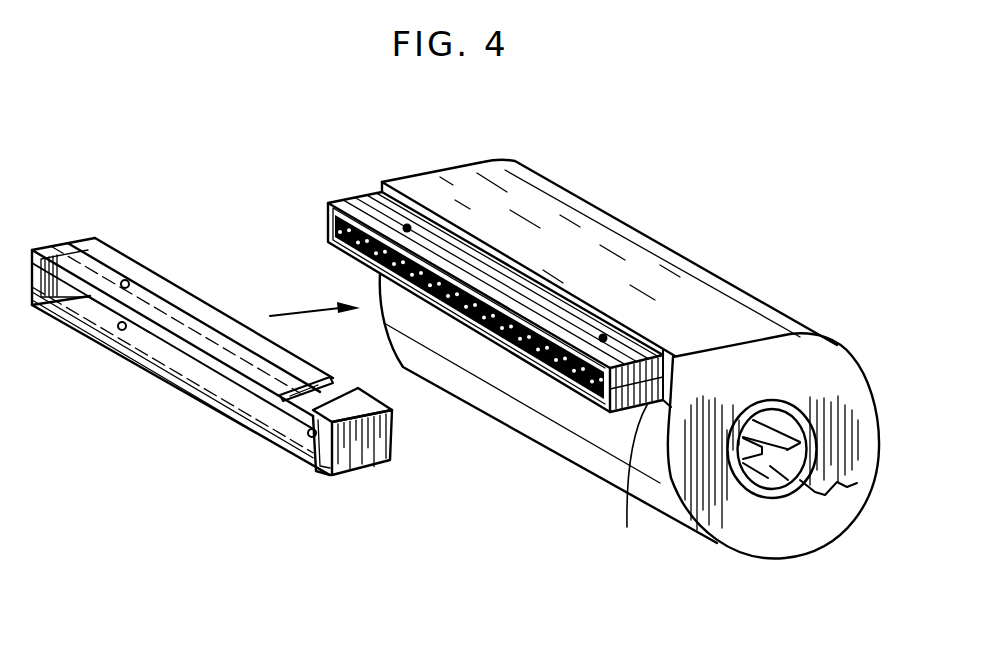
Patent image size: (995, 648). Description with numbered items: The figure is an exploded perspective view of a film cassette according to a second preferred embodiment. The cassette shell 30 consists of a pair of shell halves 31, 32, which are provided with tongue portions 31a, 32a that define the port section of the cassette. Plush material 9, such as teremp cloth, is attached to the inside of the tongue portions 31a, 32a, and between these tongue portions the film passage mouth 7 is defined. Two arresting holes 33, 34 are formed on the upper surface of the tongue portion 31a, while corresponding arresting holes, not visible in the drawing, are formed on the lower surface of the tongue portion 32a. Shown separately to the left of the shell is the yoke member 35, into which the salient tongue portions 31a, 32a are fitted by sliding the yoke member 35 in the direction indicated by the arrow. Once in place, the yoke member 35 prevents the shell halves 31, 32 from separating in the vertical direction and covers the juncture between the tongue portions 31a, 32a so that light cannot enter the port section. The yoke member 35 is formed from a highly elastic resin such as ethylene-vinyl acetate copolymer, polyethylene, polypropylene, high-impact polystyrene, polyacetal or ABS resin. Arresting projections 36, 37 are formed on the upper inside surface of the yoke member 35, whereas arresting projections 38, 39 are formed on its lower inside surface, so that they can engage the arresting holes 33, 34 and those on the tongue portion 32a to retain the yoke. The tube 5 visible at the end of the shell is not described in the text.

The tube 5 is at (788, 400).
The film passage mouth 7 is at (518, 353).
The plush material 9 is at (567, 380).
The cassette shell 30 is at (603, 191).
The shell half 31 is at (829, 363).
The tongue portion 31a is at (363, 207).
The shell half 32 is at (778, 536).
The tongue portion 32a is at (631, 482).
The arresting hole 33 is at (604, 337).
The arresting hole 34 is at (408, 226).
The yoke member 35 is at (70, 222).
The arresting projection 36 is at (320, 377).
The arresting projection 37 is at (130, 278).
The arresting projection 38 is at (307, 436).
The arresting projection 39 is at (119, 330).